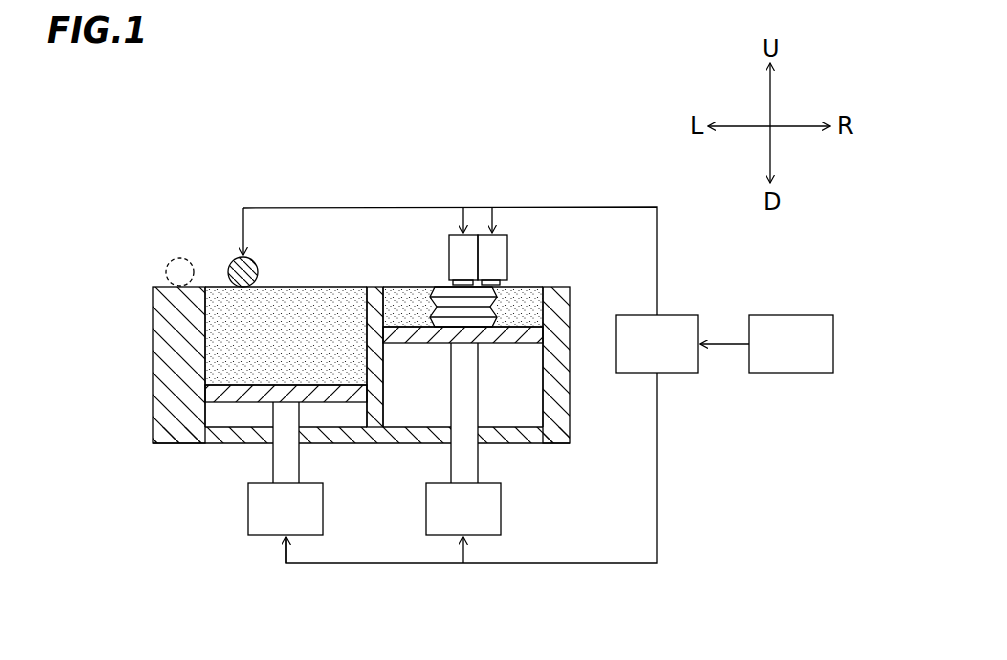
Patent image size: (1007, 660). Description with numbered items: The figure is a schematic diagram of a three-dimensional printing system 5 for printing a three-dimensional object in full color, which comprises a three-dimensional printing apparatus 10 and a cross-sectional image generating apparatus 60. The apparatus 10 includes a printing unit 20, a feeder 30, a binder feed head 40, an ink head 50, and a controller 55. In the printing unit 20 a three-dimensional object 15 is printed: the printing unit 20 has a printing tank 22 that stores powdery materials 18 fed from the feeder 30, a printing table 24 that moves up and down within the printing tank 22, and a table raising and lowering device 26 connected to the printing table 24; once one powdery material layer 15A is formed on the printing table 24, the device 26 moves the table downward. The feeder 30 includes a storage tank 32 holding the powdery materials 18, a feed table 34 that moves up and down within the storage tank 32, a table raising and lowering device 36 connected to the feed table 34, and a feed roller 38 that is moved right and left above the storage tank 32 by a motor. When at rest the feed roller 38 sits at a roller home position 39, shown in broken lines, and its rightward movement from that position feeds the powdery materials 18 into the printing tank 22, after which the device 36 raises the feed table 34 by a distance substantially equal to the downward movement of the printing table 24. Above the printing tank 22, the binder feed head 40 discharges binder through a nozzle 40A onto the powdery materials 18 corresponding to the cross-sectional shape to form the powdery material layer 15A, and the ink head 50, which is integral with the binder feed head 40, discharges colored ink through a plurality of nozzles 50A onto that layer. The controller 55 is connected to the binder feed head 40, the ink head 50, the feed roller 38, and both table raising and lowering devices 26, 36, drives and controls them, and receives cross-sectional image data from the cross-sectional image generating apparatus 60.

The three-dimensional printing system 5 is at (622, 112).
The three-dimensional printing apparatus 10 is at (145, 237).
The three-dimensional object 15 is at (446, 284).
The powdery material layer 15A is at (440, 284).
The powdery materials 18 is at (345, 295).
The printing unit 20 is at (405, 262).
The printing tank 22 is at (385, 400).
The printing table 24 is at (527, 335).
The table raising and lowering device 26 is at (482, 527).
The feeder 30 is at (298, 262).
The storage tank 32 is at (217, 405).
The feed table 34 is at (207, 395).
The table raising and lowering device 36 is at (305, 528).
The feed roller 38 is at (243, 253).
The roller home position 39 is at (165, 283).
The binder feed head 40 is at (470, 243).
The nozzle 40A is at (463, 281).
The ink head 50 is at (500, 243).
The nozzles 50A is at (492, 281).
The controller 55 is at (678, 373).
The cross-sectional image generating apparatus 60 is at (777, 373).